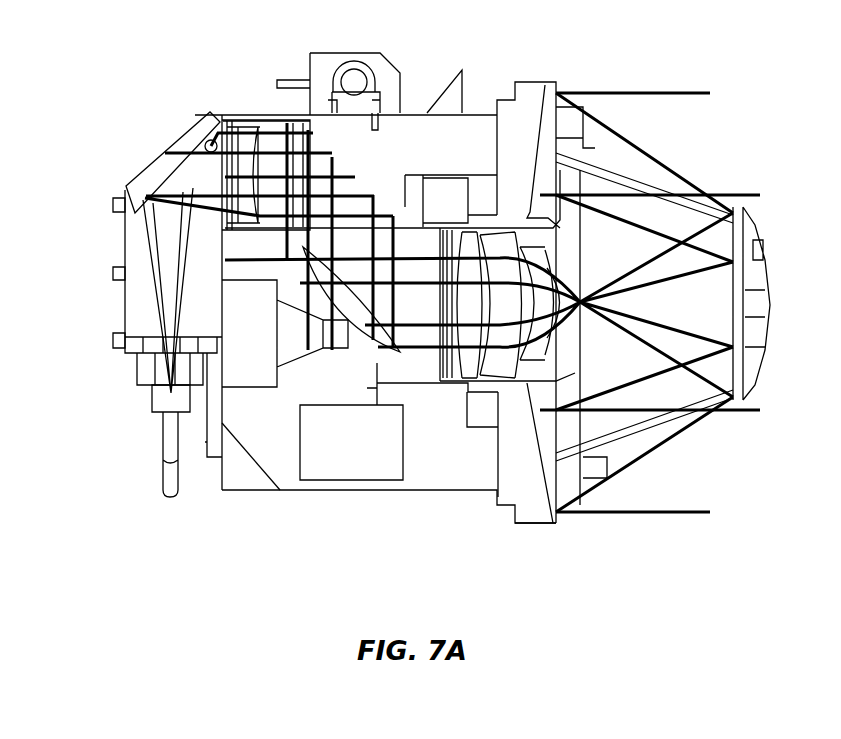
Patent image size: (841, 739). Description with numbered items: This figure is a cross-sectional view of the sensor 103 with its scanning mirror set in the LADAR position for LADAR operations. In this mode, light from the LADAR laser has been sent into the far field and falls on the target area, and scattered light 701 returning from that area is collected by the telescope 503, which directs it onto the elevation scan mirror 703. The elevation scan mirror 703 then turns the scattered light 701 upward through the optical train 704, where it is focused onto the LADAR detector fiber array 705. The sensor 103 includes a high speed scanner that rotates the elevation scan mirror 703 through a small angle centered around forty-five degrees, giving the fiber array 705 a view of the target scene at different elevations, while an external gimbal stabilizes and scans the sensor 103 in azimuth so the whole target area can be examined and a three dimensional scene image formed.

The sensor 103 is at (244, 528).
The telescope 503 is at (538, 80).
The scattered light 701 is at (693, 91).
The elevation scan mirror 703 is at (372, 356).
The optical train 704 is at (207, 142).
The LADAR detector fiber array 705 is at (160, 388).